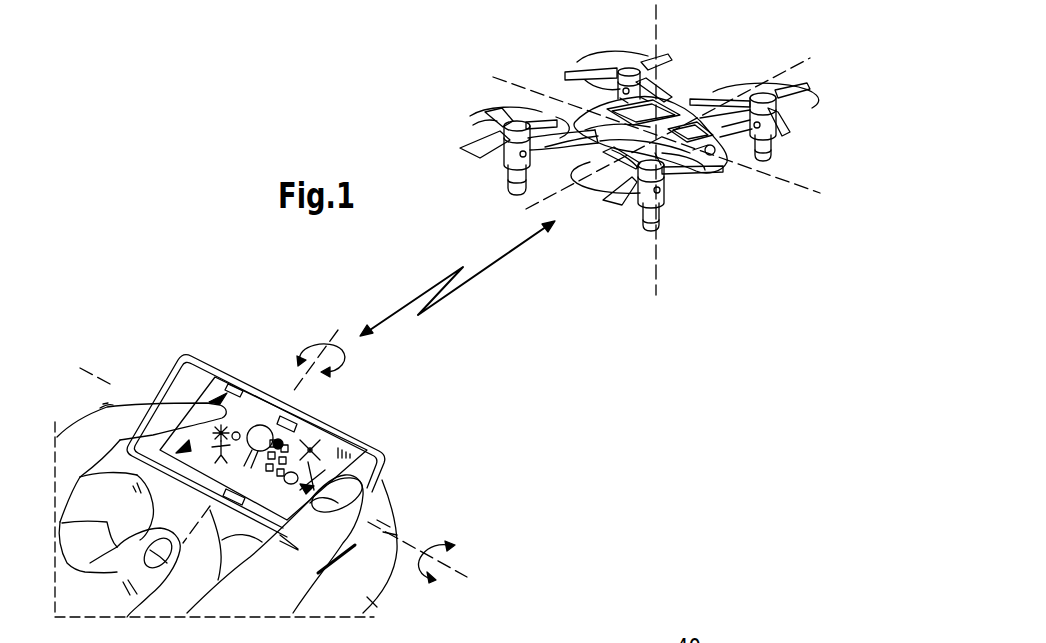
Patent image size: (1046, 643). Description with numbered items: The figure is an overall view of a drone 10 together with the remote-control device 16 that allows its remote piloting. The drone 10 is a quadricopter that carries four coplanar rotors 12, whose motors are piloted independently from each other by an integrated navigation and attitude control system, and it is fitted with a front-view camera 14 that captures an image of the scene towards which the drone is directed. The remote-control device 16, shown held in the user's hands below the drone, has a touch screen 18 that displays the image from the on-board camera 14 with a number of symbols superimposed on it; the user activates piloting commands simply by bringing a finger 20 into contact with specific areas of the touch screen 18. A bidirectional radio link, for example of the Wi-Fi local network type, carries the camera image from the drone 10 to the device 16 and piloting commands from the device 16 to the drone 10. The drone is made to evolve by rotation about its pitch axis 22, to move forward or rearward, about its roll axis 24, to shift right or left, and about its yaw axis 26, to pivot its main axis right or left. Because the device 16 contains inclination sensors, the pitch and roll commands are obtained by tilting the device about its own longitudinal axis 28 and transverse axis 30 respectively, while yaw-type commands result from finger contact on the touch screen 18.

The drone 10 is at (643, 150).
The coplanar rotors 12 is at (470, 145).
The front-view camera 14 is at (726, 163).
The remote-control device 16 is at (313, 446).
The touch screen 18 is at (387, 460).
The user's finger 20 is at (178, 407).
The pitch axis 22 is at (563, 196).
The roll axis 24 is at (798, 188).
The yaw axis 26 is at (657, 18).
The longitudinal axis 28 is at (466, 567).
The transverse axis 30 is at (336, 333).